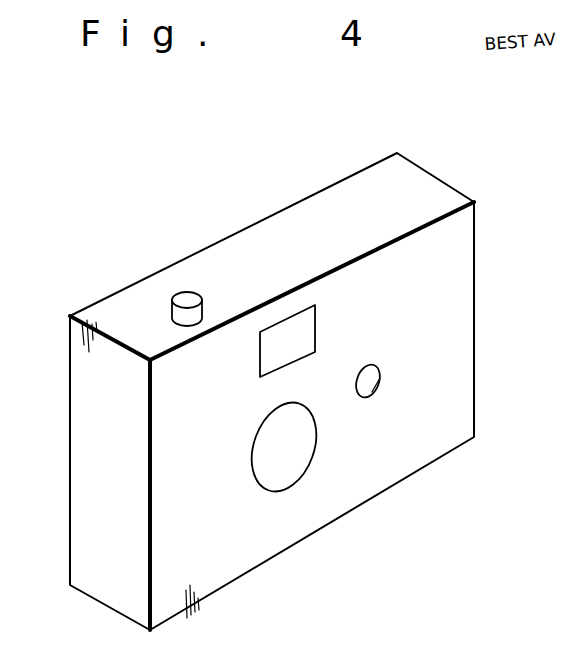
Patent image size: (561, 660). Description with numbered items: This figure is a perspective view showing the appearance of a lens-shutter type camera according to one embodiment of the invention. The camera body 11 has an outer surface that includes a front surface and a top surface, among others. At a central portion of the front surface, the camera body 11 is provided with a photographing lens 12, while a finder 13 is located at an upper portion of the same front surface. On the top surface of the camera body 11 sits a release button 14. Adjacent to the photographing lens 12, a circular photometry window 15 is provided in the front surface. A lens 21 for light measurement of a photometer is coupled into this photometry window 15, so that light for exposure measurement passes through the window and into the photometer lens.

The camera body 11 is at (343, 192).
The photographing lens 12 is at (280, 483).
The finder 13 is at (285, 323).
The release button 14 is at (181, 293).
The circular photometry window 15 is at (384, 391).
The lens for light measurement 21 is at (367, 397).